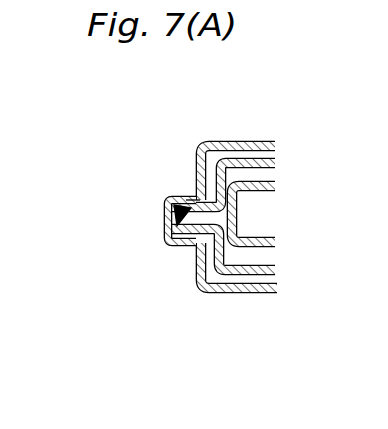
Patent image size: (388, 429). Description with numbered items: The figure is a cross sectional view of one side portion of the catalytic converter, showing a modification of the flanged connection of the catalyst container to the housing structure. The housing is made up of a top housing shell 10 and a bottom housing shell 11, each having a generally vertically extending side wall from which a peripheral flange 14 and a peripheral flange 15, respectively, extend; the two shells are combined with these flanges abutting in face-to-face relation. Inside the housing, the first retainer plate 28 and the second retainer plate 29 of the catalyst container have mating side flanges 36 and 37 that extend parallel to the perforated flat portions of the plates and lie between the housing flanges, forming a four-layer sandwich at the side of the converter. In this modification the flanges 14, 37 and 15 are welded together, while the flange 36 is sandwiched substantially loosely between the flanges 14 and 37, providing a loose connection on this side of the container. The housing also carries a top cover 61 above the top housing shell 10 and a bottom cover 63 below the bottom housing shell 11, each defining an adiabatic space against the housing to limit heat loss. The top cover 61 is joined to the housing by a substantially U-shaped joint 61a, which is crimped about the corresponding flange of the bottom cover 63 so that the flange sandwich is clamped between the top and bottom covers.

The top housing shell 10 is at (245, 142).
The bottom housing shell 11 is at (258, 277).
The peripheral flange 14 is at (199, 195).
The peripheral flange 15 is at (198, 256).
The first retainer plate 28 is at (277, 166).
The second retainer plate 29 is at (255, 237).
The mating side flange 36 is at (194, 200).
The mating side flange 37 is at (187, 232).
The top cover 61 is at (218, 142).
The U-shaped joint 61a is at (166, 211).
The bottom cover 63 is at (247, 292).